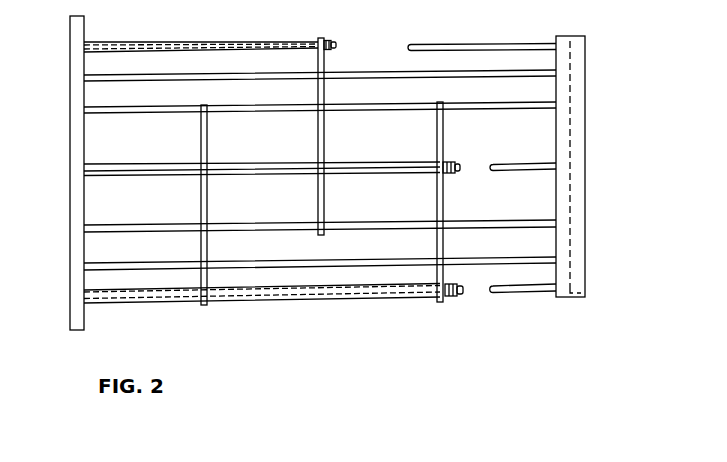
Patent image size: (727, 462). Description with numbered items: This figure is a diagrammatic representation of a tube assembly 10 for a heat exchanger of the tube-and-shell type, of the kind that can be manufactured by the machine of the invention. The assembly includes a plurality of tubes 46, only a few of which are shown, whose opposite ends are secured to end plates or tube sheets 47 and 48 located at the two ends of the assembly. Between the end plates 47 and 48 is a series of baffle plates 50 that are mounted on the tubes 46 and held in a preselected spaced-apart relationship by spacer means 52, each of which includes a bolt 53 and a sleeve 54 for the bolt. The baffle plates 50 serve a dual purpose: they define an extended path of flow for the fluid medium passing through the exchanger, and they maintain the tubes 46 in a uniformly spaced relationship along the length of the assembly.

The security grille assembly 10 is at (355, 223).
The tube 46 is at (467, 43).
The end plate 47 is at (580, 95).
The end plate 48 is at (82, 32).
The baffle plate 50 is at (325, 68).
The spacer means 52 is at (140, 42).
The bolt 53 is at (337, 42).
The sleeve 54 is at (187, 43).